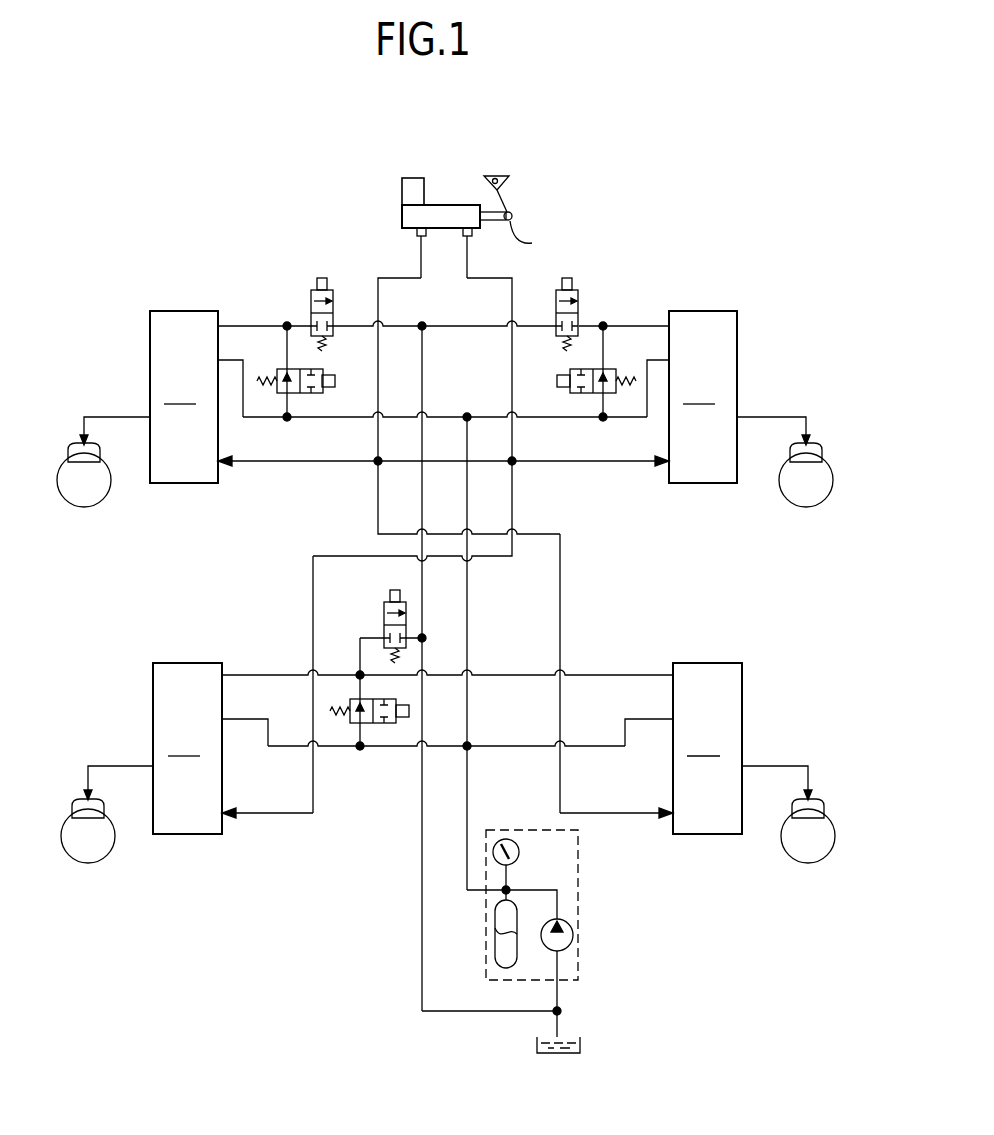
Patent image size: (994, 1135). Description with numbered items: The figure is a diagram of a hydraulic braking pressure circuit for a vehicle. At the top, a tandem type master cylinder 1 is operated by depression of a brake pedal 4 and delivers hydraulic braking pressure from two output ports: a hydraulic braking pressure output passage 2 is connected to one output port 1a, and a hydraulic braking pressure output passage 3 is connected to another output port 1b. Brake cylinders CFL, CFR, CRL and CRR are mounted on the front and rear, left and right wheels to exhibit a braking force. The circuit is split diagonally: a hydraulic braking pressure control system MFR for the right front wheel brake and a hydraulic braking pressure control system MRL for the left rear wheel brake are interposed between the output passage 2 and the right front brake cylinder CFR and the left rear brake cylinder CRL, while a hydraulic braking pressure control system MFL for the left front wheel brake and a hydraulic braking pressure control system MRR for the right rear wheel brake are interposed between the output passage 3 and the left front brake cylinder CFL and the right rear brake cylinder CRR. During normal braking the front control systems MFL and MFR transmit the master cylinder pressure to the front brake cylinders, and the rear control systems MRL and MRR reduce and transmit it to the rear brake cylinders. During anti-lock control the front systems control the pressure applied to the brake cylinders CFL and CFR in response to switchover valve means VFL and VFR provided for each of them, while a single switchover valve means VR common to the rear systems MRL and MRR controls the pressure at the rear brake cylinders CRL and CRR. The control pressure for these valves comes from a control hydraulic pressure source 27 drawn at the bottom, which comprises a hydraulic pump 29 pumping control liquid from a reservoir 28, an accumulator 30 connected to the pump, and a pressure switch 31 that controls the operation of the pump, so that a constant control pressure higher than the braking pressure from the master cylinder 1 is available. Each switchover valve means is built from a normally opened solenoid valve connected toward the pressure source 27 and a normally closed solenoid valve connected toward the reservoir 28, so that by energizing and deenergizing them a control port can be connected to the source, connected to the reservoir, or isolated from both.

The tandem type master cylinder 1 is at (446, 212).
The output port 1a is at (470, 235).
The output port 1b is at (418, 234).
The brake pedal 4 is at (530, 246).
The hydraulic braking pressure output passage 2 is at (512, 487).
The hydraulic braking pressure output passage 3 is at (378, 489).
The control hydraulic pressure source 27 is at (544, 905).
The reservoir 28 is at (580, 1039).
The hydraulic pump 29 is at (549, 947).
The accumulator 30 is at (517, 905).
The pressure switch 31 is at (519, 849).
The hydraulic braking pressure control system for left front wheel brake MFL is at (184, 397).
The hydraulic braking pressure control system for right front wheel brake MFR is at (703, 397).
The hydraulic braking pressure control system for left rear wheel brake MRL is at (187, 748).
The hydraulic braking pressure control system for right rear wheel brake MRR is at (707, 748).
The left front brake cylinder CFL is at (78, 446).
The right front brake cylinder CFR is at (813, 446).
The left rear brake cylinder CRL is at (82, 798).
The right rear brake cylinder CRR is at (815, 798).
The switchover valve means VFL is at (303, 266).
The switchover valve means VFR is at (663, 266).
The switchover valve means VR is at (379, 628).